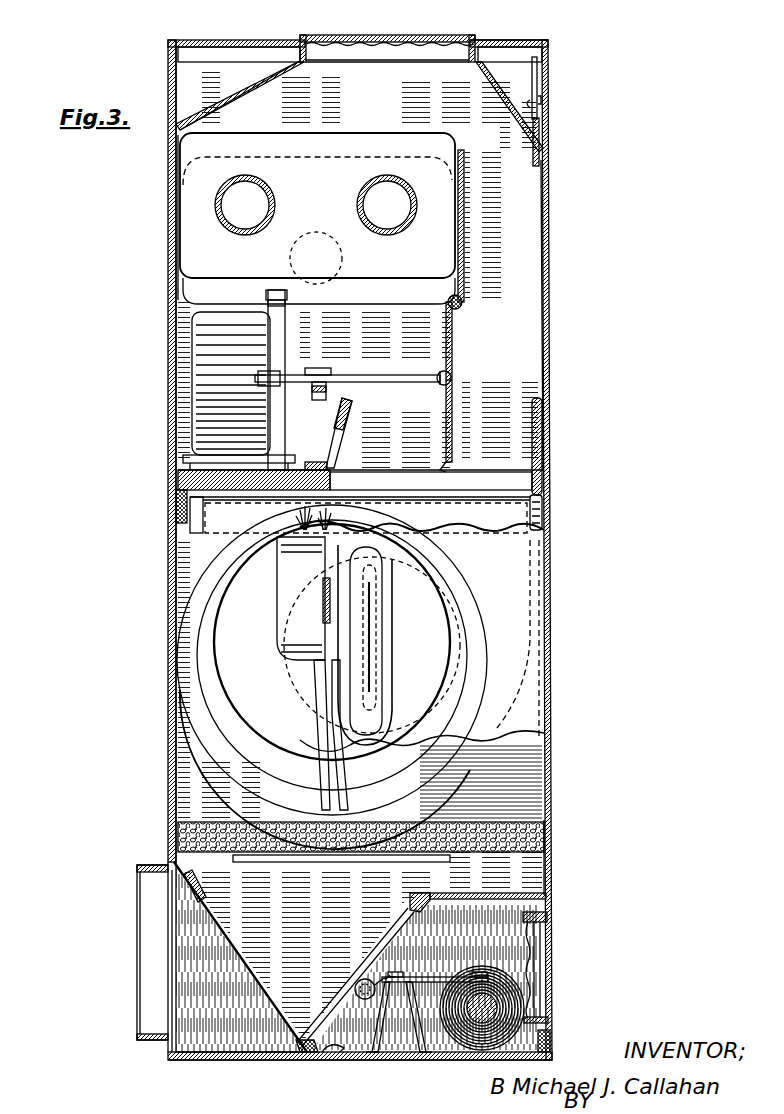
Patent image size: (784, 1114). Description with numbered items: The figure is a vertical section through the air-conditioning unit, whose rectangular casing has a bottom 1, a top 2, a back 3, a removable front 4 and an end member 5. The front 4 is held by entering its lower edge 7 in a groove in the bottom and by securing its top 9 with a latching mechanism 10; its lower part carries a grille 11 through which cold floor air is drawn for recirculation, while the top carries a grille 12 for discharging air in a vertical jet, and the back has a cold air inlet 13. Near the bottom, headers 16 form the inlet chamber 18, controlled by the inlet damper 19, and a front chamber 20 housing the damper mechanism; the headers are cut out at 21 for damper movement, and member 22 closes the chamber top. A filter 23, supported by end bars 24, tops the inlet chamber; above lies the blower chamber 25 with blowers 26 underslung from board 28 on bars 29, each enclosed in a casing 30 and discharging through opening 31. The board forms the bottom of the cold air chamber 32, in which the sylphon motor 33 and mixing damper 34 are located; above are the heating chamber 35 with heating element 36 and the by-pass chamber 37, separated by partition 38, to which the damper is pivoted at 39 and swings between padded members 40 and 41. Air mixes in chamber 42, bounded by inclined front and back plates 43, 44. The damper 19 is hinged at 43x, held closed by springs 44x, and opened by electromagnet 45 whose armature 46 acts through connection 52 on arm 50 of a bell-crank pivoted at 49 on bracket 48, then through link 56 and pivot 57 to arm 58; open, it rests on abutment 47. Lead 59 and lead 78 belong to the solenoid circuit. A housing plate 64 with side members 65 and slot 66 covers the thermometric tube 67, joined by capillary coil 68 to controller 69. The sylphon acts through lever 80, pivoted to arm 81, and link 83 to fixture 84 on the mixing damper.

The bottom 1 is at (200, 1064).
The top 2 is at (546, 42).
The back 3 is at (159, 406).
The front 4 is at (555, 334).
The end member 5 is at (520, 598).
The lower edge 7 is at (550, 1032).
The top of front 9 is at (543, 70).
The latching mechanism 10 is at (542, 103).
The grille 11 is at (541, 960).
The grille 12 is at (384, 44).
The inlet 13 is at (140, 942).
The header 16 is at (243, 1062).
The inlet chamber 18 is at (306, 958).
The inlet damper 19 is at (375, 950).
The front chamber 20 is at (520, 906).
The cut-out 21 is at (250, 982).
The member 22 is at (547, 872).
The filter 23 is at (178, 831).
The end bar 24 is at (276, 862).
The blower chamber 25 is at (525, 782).
The blower 26 is at (216, 618).
The board 28 is at (176, 485).
The bar 29 is at (205, 522).
The blower casing 30 is at (193, 690).
The opening 31 is at (505, 483).
The cold air chamber 32 is at (360, 390).
The sylphon motor 33 is at (205, 346).
The mixing damper 34 is at (455, 406).
The heating chamber 35 is at (170, 210).
The heating element 36 is at (192, 243).
The by-pass chamber 37 is at (520, 242).
The partition 38 is at (458, 222).
The pivot 39 is at (468, 309).
The padded member 40 is at (546, 440).
The padded member 41 is at (337, 455).
The mixing chamber 42 is at (363, 110).
The front plate 43 is at (524, 145).
The back plate 44 is at (236, 96).
The electromagnet 45 is at (505, 1007).
The armature 46 is at (480, 1024).
The abutment 47 is at (418, 898).
The bracket 48 is at (415, 1048).
The pivot 49 is at (392, 977).
The arm 50 is at (446, 976).
The pivotal connection 52 is at (512, 968).
The link 56 is at (400, 975).
The pivot 57 is at (362, 986).
The arm 58 is at (356, 992).
The lead 59 is at (384, 525).
The housing plate 64 is at (381, 652).
The side flat member 65 is at (392, 681).
The elongated slot 66 is at (372, 622).
The thermometric tube 67 is at (372, 587).
The capillary coil 68 is at (350, 789).
The automatic controller 69 is at (282, 628).
The lead 78 is at (290, 523).
The lever 80 is at (282, 376).
The arm 81 is at (318, 392).
The link 83 is at (380, 374).
The fixture 84 is at (455, 358).
The hinge 43x is at (306, 1058).
The spring 44x is at (342, 1062).